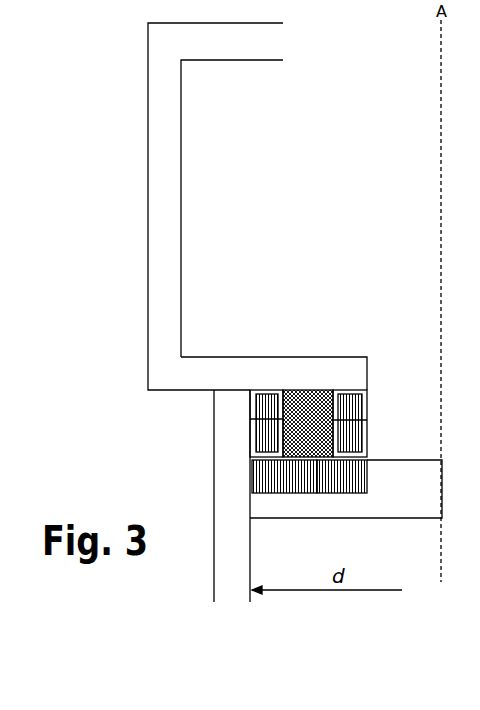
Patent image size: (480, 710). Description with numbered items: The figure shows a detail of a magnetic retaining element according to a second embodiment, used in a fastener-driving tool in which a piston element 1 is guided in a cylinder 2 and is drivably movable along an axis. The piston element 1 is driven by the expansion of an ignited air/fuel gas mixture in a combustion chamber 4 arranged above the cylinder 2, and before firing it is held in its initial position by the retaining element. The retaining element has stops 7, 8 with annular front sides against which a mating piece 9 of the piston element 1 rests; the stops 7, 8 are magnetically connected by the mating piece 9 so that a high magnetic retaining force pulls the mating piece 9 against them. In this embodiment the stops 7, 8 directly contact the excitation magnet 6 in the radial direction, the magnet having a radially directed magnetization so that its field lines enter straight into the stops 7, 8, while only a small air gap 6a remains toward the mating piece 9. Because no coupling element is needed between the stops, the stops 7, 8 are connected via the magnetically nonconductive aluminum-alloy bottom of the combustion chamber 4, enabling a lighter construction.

The piston element 1 is at (395, 478).
The cylinder 2 is at (227, 405).
The combustion chamber 4 is at (193, 367).
The excitation magnet 6 is at (307, 417).
The air gap 6a is at (300, 463).
The stop 7 is at (367, 403).
The stop 8 is at (250, 427).
The mating piece 9 is at (337, 472).